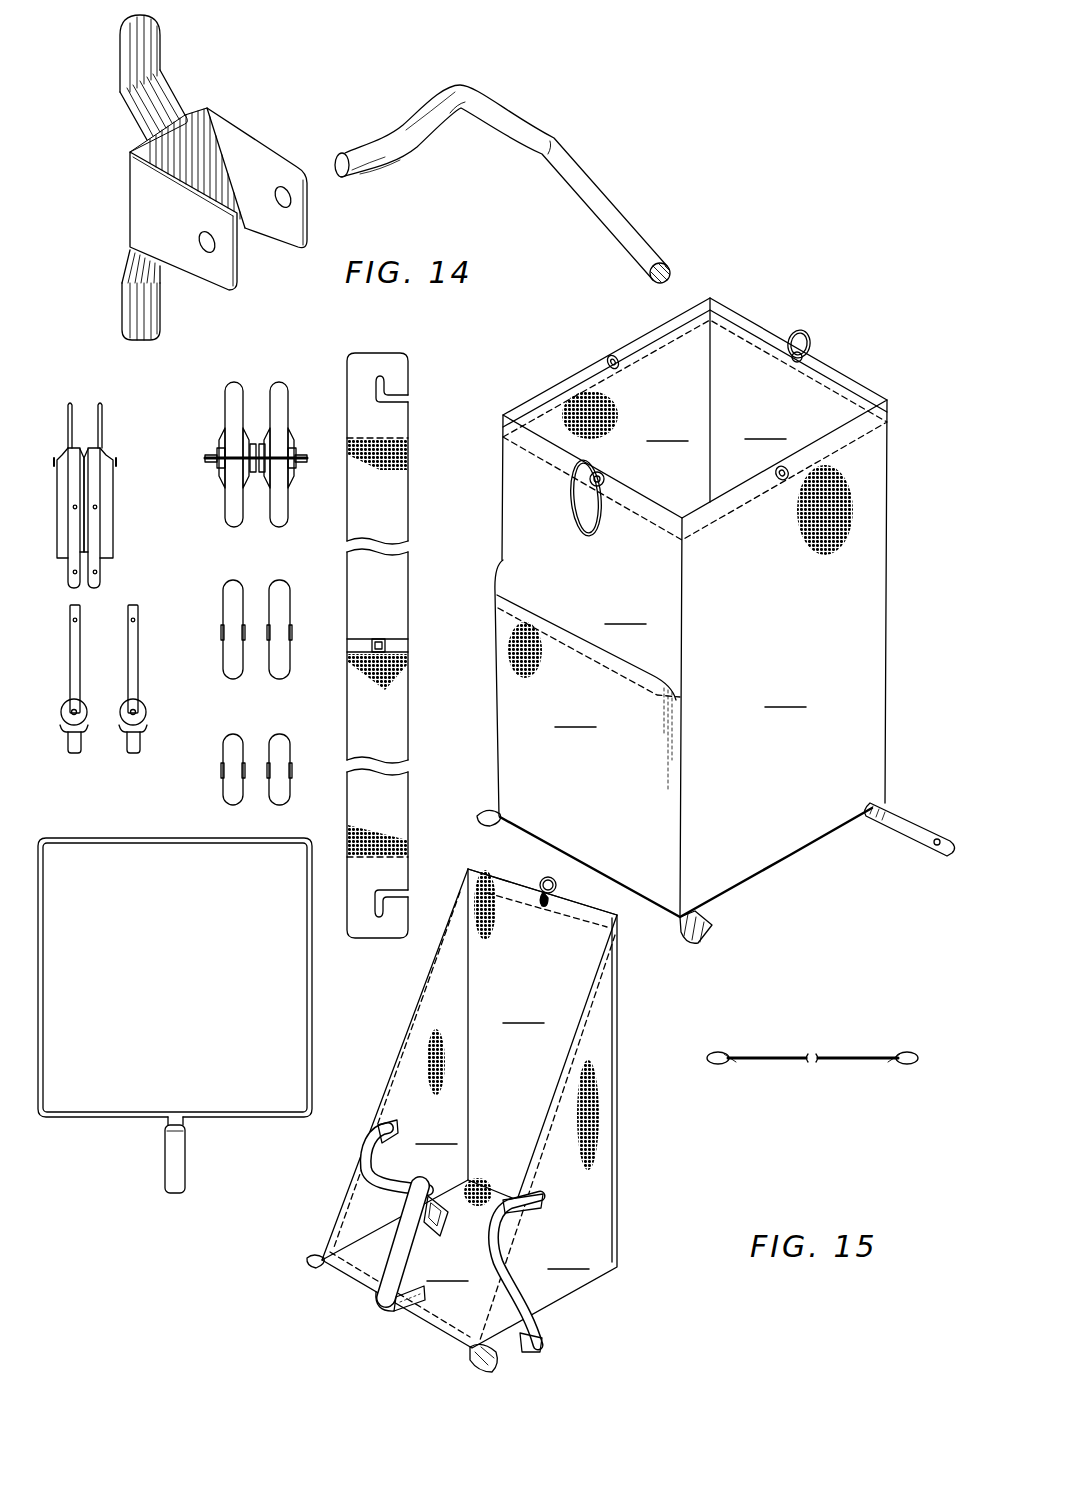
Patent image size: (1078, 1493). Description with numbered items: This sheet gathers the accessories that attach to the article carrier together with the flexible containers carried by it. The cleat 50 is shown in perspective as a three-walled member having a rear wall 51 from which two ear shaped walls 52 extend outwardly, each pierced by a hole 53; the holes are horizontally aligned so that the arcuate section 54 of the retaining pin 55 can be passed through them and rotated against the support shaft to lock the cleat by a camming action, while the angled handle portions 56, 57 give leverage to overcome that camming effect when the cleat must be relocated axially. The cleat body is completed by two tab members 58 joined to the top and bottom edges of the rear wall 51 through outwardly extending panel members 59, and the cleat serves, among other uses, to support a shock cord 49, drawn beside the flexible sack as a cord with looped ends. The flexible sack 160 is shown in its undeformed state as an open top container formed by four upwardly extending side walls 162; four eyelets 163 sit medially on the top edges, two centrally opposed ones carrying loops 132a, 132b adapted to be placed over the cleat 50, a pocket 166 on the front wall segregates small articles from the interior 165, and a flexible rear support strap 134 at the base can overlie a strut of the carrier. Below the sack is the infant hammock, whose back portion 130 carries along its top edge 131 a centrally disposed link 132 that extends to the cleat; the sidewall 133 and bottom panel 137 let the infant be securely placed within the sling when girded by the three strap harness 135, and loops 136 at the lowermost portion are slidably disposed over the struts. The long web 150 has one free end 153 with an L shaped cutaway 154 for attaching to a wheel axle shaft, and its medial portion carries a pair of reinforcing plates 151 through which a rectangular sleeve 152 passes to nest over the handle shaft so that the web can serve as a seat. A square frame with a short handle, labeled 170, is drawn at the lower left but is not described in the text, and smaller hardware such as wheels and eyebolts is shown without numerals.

In FIG. 15, the shock cord 49 is at (752, 1056).
In FIG. 14, the cleat 50 is at (215, 175).
In FIG. 14, the rear wall 51 is at (184, 138).
In FIG. 14, the ear shaped walls 52 is at (250, 155).
In FIG. 14, the hole 53 is at (293, 204).
In FIG. 14, the arcuate section 54 is at (412, 128).
In FIG. 14, the retaining pin 55 is at (504, 156).
In FIG. 14, the handle portion 56 is at (522, 128).
In FIG. 14, the handle portion 57 is at (617, 222).
In FIG. 14, the tab members 58 is at (162, 31).
In FIG. 14, the panel members 59 is at (163, 87).
In FIG. 15, the back portion 130 is at (469, 1100).
In FIG. 15, the top edge 131 is at (603, 909).
In FIG. 15, the link 132 is at (546, 876).
In FIG. 15, the loop 132a is at (808, 334).
In FIG. 15, the loop 132b is at (574, 512).
In FIG. 15, the sidewall 133 is at (469, 1108).
In FIG. 15, the rear support strap 134 is at (923, 848).
In FIG. 15, the three strap harness 135 is at (385, 1181).
In FIG. 15, the loops 136 is at (711, 931).
In FIG. 15, the bottom panel 137 is at (419, 1257).
In FIG. 15, the web 150 is at (378, 638).
In FIG. 15, the reinforcing plates 151 is at (398, 649).
In FIG. 15, the rectangular sleeve 152 is at (386, 641).
In FIG. 15, the free end 153 is at (394, 372).
In FIG. 15, the L shaped cutaway 154 is at (376, 380).
In FIG. 15, the flexible sack 160 is at (631, 819).
In FIG. 15, the side walls 162 is at (693, 607).
In FIG. 15, the eyelets 163 is at (612, 356).
In FIG. 15, the interior 165 is at (823, 420).
In FIG. 15, the pocket 166 is at (587, 688).
In FIG. 15, the frame 170 is at (95, 1123).